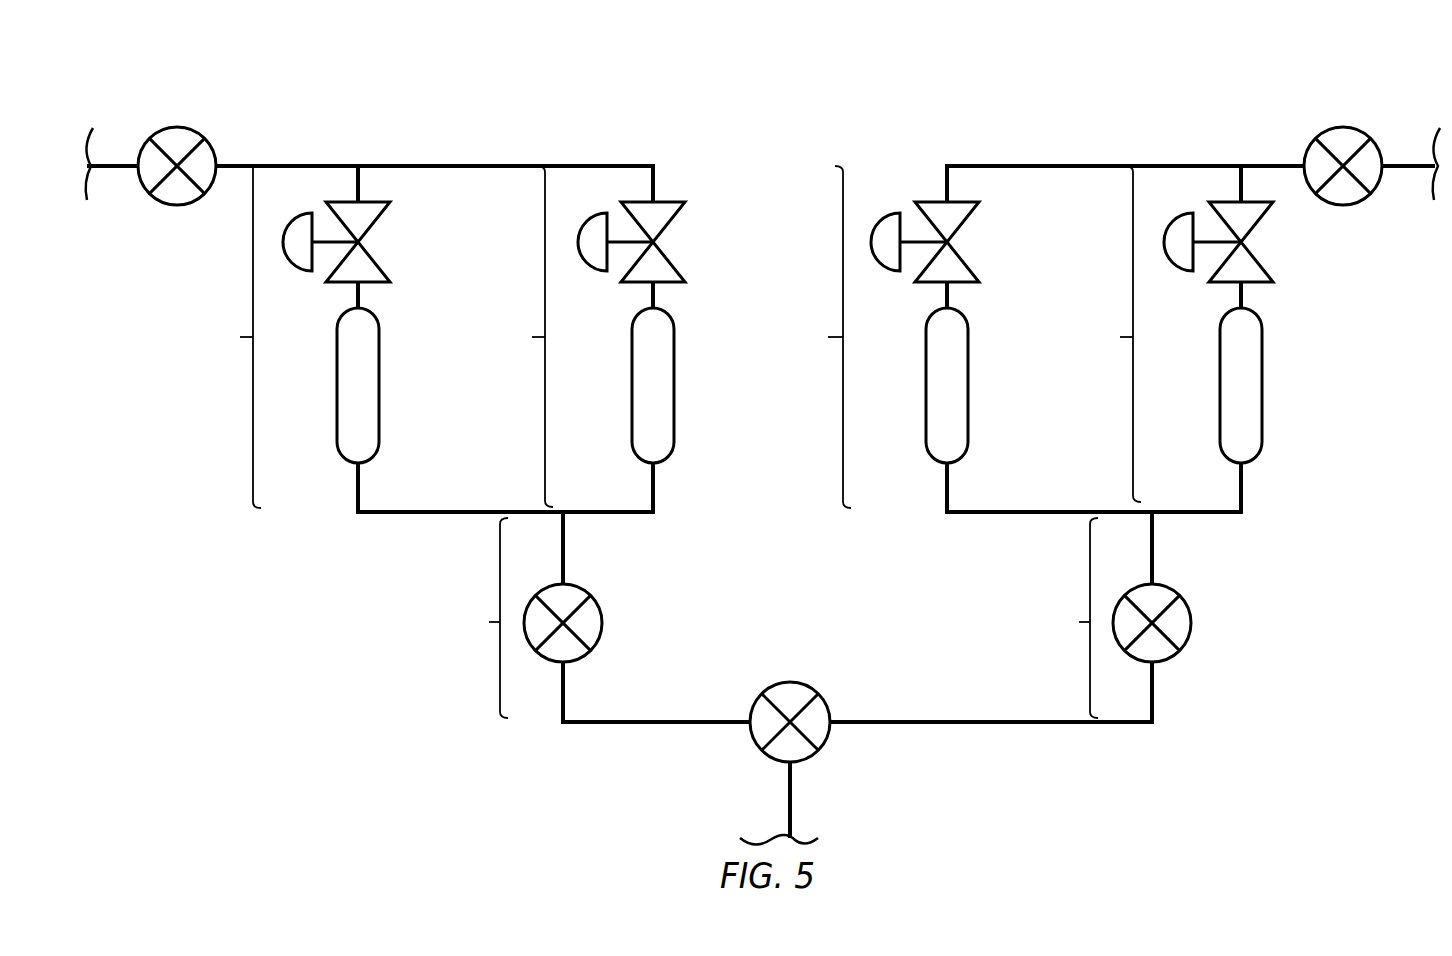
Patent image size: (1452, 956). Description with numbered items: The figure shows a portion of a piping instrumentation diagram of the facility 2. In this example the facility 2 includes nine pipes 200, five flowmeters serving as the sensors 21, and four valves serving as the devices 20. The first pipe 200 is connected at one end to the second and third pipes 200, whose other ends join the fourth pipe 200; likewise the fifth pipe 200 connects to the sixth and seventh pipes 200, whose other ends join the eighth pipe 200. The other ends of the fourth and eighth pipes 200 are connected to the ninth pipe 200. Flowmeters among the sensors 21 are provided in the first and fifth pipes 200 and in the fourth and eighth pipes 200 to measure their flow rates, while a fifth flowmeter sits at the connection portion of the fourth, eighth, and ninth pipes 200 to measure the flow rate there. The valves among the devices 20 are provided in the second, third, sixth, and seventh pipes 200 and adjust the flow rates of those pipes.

The facility 2 is at (872, 50).
The devices 20 is at (374, 255).
The sensors 21 is at (170, 127).
The pipes 200 is at (519, 166).